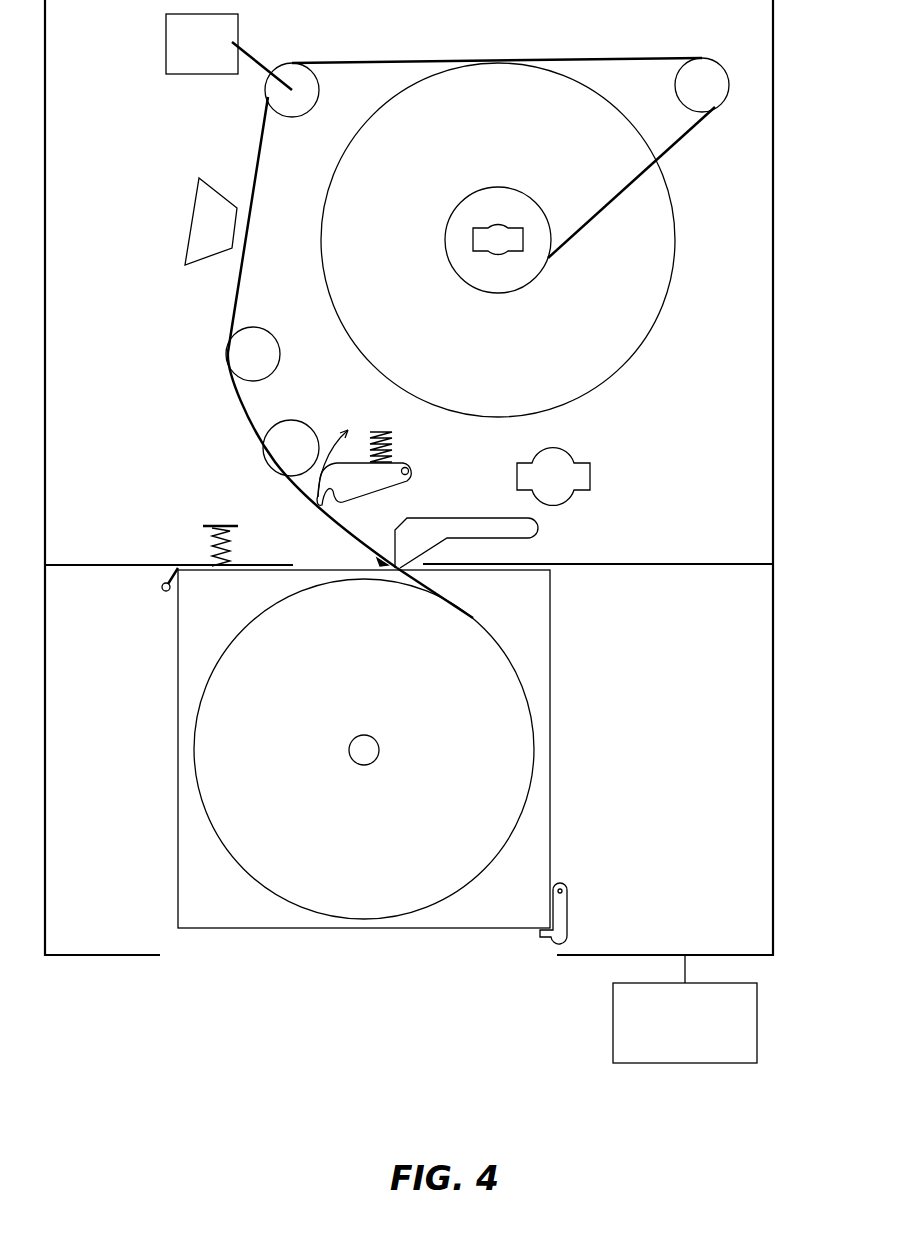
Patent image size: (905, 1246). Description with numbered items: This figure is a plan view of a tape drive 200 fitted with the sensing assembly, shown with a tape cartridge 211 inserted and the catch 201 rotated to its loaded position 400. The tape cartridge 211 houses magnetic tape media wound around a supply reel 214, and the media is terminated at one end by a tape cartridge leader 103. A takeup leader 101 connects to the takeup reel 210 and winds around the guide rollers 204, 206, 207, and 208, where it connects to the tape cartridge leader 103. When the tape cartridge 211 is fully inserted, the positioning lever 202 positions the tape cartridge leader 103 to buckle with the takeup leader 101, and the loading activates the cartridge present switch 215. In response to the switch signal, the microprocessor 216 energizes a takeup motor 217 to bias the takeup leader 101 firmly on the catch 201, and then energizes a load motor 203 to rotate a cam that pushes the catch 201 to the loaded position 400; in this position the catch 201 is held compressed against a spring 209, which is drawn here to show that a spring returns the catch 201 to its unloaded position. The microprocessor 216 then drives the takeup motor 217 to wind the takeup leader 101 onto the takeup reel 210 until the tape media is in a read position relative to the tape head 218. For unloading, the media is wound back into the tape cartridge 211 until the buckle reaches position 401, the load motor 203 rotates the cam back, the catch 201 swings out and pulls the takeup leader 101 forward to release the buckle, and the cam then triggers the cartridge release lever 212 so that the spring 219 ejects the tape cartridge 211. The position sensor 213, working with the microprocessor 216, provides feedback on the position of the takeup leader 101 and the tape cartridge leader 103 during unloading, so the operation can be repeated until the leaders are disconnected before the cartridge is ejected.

The tape drive 200 is at (773, 335).
The position sensor 213 is at (172, 38).
The guide roller 207 is at (308, 96).
The guide roller 208 is at (717, 78).
The tape head 218 is at (202, 203).
The takeup reel 210 is at (675, 310).
The takeup motor 217 is at (492, 227).
The takeup leader 101 is at (243, 257).
The tape cartridge leader 103 is at (440, 590).
The guide roller 206 is at (248, 338).
The guide roller 204 is at (273, 453).
The loaded position 400 is at (323, 470).
The spring 209 is at (392, 440).
The catch 201 is at (378, 485).
The load motor 203 is at (590, 478).
The positioning lever 202 is at (538, 522).
The spring 219 is at (210, 547).
The buckle position 401 is at (377, 558).
The cartridge present switch 215 is at (170, 573).
The tape cartridge 211 is at (550, 727).
The supply reel 214 is at (492, 860).
The cartridge release lever 212 is at (568, 905).
The microprocessor 216 is at (613, 1000).